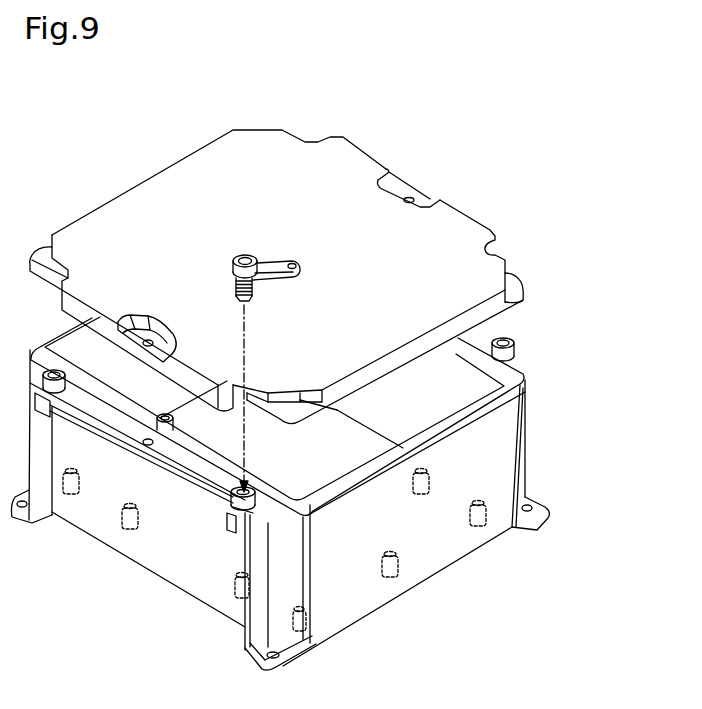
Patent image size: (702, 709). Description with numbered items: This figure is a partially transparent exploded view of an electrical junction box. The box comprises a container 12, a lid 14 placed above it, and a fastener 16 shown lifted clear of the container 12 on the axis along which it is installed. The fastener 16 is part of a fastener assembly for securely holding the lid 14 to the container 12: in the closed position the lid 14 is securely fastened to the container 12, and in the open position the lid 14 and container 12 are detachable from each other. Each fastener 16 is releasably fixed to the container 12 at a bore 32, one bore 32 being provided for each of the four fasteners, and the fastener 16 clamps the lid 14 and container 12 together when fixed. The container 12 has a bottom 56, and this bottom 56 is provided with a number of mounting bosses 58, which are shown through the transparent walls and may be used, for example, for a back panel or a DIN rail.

The container 12 is at (523, 390).
The lid 14 is at (466, 268).
The fastener 16 is at (233, 263).
The bore 32 is at (226, 507).
The bottom 56 is at (302, 465).
The mounting boss 58 is at (393, 577).